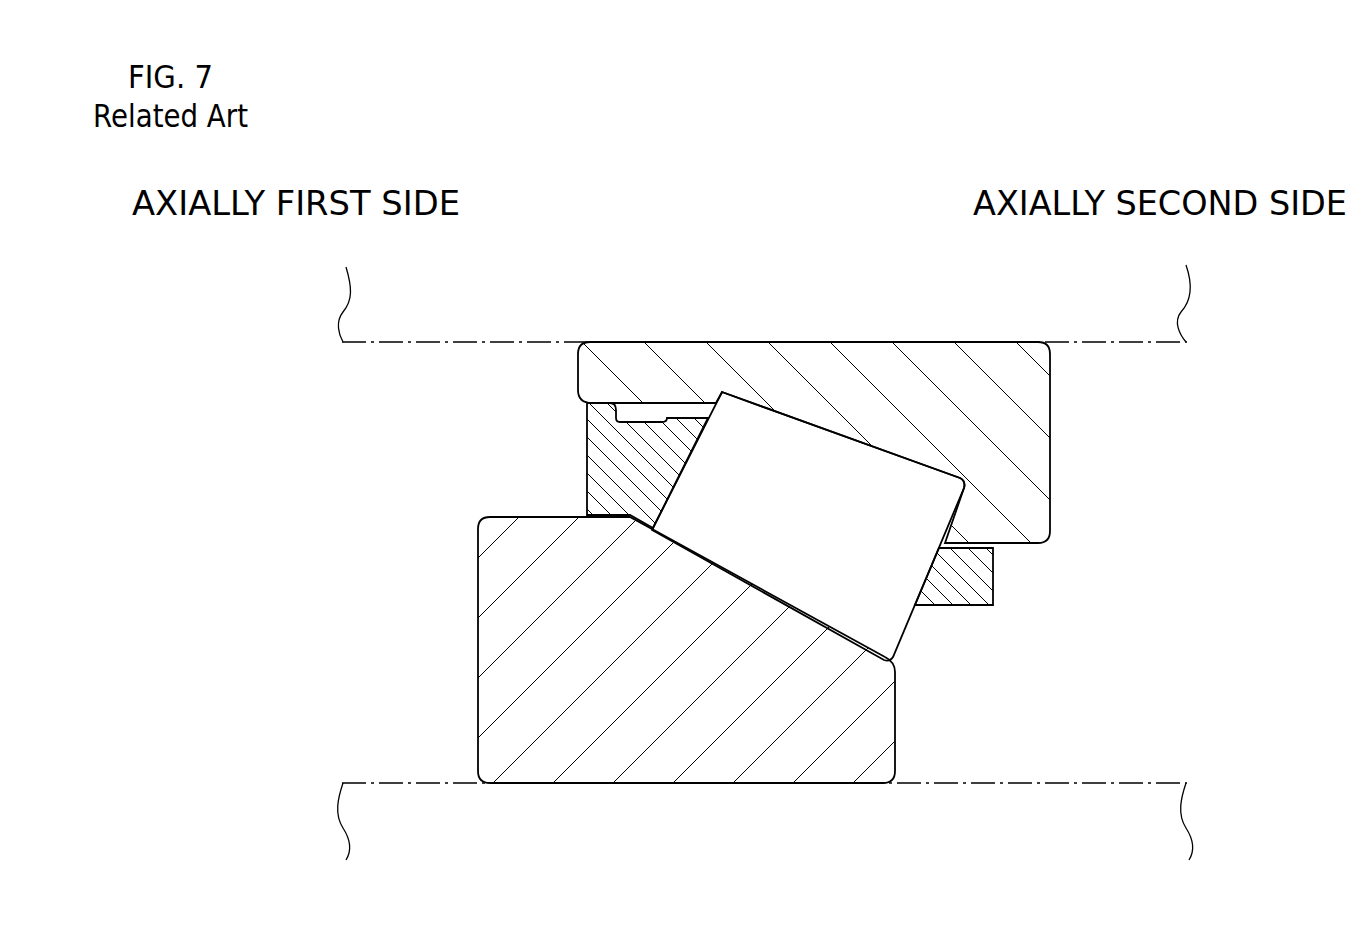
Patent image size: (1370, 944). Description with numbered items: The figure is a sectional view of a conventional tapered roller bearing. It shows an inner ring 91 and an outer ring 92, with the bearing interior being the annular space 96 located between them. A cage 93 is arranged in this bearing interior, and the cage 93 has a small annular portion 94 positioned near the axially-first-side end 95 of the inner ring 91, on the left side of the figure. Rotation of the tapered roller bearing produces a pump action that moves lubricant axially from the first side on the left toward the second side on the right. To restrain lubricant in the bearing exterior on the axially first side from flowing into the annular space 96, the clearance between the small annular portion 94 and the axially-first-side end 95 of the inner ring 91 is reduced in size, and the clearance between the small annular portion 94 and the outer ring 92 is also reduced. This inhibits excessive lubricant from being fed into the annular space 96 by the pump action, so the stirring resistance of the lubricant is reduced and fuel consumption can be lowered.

The inner ring 91 is at (859, 341).
The outer ring 92 is at (707, 785).
The cage 93 is at (584, 487).
The small annular portion 94 is at (622, 450).
The axially-first-side end 95 is at (593, 370).
The annular space 96 is at (768, 437).